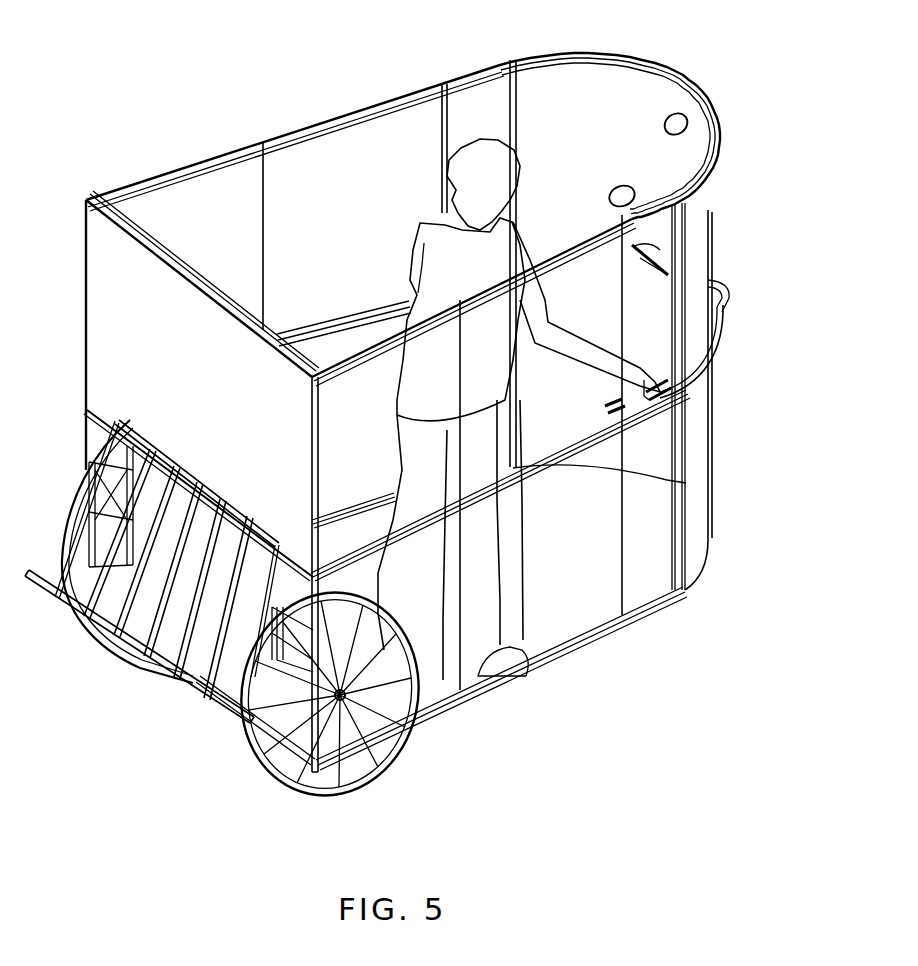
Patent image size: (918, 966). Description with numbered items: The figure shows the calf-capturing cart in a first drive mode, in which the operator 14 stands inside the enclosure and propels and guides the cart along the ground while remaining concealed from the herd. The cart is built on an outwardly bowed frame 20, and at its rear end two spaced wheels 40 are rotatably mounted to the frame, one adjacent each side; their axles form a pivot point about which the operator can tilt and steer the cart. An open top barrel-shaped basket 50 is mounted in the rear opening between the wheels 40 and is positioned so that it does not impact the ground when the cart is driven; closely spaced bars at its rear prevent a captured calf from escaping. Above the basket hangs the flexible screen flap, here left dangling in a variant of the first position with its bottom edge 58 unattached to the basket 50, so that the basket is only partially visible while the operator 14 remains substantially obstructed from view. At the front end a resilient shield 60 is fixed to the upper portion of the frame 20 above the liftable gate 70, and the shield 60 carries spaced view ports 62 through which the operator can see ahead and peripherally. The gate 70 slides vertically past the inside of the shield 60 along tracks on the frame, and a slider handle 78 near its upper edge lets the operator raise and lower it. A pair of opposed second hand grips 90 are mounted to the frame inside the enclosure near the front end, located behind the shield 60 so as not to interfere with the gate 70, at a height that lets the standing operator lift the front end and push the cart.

The operator 14 is at (470, 275).
The frame 20 is at (567, 653).
The wheels 40 is at (377, 762).
The basket 50 is at (152, 593).
The bottom edge 58 is at (205, 613).
The shield 60 is at (547, 104).
The view ports 62 is at (668, 133).
The gate 70 is at (700, 477).
The slider handle 78 is at (650, 255).
The second hand grips 90 is at (648, 377).